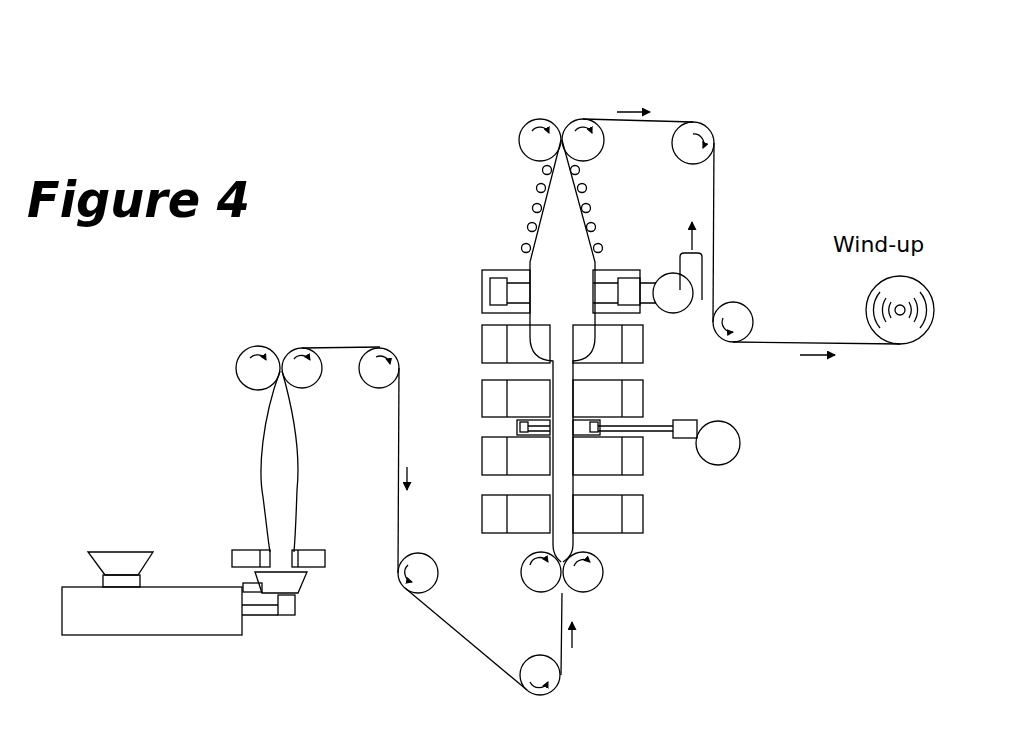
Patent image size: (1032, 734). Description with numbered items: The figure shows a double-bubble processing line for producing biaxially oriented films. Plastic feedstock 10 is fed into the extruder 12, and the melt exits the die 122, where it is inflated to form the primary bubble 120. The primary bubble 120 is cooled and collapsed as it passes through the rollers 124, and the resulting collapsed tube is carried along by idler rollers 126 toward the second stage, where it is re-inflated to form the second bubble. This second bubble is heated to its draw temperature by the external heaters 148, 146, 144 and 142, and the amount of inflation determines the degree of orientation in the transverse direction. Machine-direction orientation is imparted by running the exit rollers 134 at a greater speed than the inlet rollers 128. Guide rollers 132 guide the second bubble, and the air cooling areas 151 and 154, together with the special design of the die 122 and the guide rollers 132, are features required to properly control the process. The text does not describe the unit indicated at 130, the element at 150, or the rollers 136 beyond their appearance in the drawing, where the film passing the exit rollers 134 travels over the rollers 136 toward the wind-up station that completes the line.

The plastic feedstock 10 is at (118, 547).
The extruder 12 is at (152, 593).
The primary bubble 120 is at (287, 480).
The die 122 is at (313, 565).
The rollers 124 is at (245, 378).
The idler rollers 126 is at (370, 358).
The inlet rollers 128 is at (527, 580).
The orientation / heating unit 130 is at (645, 400).
The guide rollers 132 is at (527, 247).
The exit rollers 134 is at (532, 132).
The idler rollers 136 is at (707, 130).
The external heater 142 is at (490, 347).
The external heater 144 is at (493, 405).
The external heater 146 is at (493, 463).
The external heater 148 is at (497, 515).
The sensor 150 is at (600, 438).
The air cooling area 151 is at (740, 445).
The air cooling area 154 is at (478, 283).